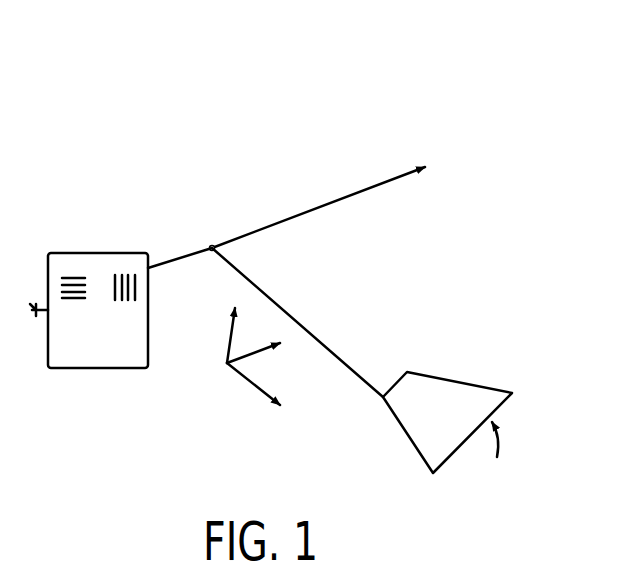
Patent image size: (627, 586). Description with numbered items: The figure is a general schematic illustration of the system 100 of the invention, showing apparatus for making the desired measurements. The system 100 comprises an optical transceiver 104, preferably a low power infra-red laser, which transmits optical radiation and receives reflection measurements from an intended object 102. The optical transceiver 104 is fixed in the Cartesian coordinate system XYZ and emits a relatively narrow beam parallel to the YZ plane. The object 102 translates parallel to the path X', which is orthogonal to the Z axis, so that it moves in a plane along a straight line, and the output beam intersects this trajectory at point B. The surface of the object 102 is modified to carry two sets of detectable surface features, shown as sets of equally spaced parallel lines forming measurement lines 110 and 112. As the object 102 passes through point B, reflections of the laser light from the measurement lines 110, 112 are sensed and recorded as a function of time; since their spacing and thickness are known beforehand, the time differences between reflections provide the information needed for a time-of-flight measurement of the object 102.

The system 100 is at (487, 60).
The object 102 is at (83, 253).
The optical transceiver 104 is at (459, 377).
The measurement lines 110 is at (120, 302).
The measurement lines 112 is at (72, 300).